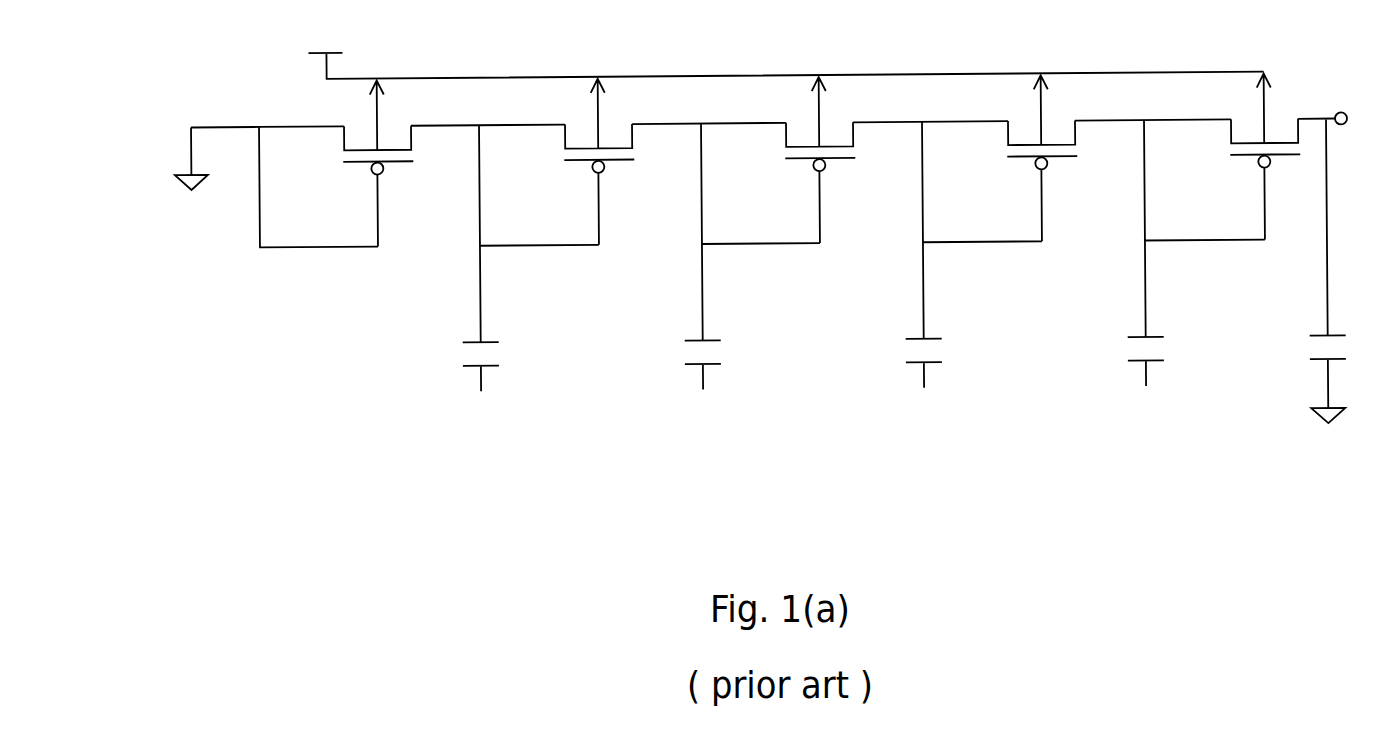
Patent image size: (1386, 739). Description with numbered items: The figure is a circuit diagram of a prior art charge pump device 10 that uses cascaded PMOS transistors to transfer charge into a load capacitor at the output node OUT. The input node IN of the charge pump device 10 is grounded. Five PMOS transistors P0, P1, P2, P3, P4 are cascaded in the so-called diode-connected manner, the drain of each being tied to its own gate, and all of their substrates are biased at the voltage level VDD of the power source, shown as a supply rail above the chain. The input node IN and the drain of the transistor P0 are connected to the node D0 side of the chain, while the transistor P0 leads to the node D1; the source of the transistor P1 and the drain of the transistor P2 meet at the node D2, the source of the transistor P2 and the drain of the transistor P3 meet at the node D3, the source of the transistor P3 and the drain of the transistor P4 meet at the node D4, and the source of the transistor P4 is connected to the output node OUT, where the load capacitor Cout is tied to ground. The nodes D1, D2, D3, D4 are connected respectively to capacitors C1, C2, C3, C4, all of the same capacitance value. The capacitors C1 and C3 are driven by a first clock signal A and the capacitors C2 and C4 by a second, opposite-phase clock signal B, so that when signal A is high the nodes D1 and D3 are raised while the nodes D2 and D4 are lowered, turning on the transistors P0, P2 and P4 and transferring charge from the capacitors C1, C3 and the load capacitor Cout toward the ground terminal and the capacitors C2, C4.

The charge pump device 10 is at (775, 237).
The voltage level of the power source VDD is at (784, 45).
The input node IN is at (217, 158).
The output node OUT is at (1337, 206).
The PMOS transistor P0 is at (356, 163).
The PMOS transistor P1 is at (578, 162).
The PMOS transistor P2 is at (800, 160).
The PMOS transistor P3 is at (1022, 158).
The PMOS transistor P4 is at (1245, 156).
The node D0 is at (307, 173).
The node D1 is at (533, 219).
The node D2 is at (755, 219).
The node D3 is at (974, 215).
The node D4 is at (1195, 214).
The capacitor C1 is at (463, 385).
The capacitor C2 is at (680, 383).
The capacitor C3 is at (903, 381).
The capacitor C4 is at (1125, 379).
The load capacitor Cout is at (1295, 377).